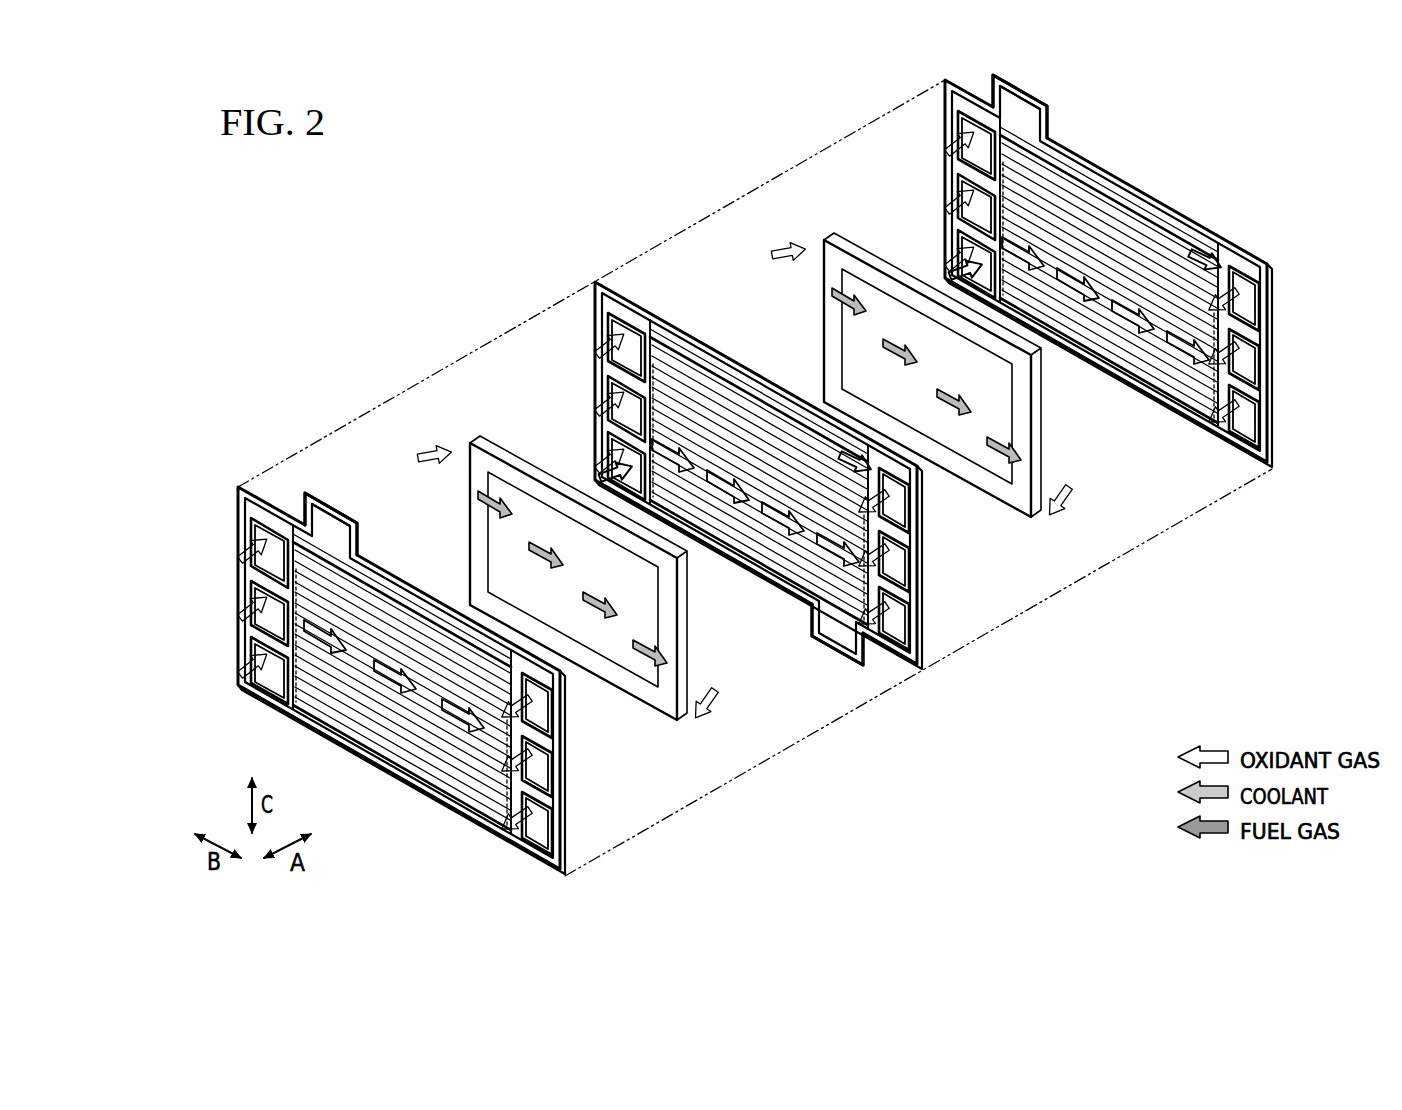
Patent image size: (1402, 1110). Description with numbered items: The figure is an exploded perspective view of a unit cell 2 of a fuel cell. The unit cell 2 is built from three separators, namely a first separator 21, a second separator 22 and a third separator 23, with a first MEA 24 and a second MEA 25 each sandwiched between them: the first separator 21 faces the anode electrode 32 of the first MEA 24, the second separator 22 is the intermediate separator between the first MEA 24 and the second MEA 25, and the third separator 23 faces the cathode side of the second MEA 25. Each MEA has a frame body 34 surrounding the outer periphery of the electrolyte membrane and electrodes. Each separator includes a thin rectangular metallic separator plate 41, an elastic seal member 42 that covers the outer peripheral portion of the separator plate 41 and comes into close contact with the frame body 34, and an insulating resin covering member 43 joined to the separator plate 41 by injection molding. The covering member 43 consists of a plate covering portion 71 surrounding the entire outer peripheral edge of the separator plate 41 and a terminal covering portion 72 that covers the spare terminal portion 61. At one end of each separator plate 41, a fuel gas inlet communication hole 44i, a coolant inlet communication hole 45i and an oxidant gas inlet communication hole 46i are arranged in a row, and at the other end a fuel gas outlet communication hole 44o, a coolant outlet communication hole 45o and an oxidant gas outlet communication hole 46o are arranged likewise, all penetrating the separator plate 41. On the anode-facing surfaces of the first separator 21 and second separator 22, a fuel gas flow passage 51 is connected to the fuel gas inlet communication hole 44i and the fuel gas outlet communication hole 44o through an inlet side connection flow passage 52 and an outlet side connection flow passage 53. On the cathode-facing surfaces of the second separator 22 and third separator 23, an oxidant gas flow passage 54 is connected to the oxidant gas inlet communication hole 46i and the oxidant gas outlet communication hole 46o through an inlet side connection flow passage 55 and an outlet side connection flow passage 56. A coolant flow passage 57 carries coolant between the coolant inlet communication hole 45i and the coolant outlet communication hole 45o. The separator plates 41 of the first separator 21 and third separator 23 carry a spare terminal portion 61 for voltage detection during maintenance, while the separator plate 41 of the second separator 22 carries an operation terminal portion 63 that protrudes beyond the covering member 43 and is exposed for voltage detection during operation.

The unit cell 2 is at (1226, 142).
The first separator 21 is at (585, 796).
The second separator 22 is at (980, 612).
The third separator 23 is at (1292, 465).
The first MEA 24 is at (718, 682).
The second MEA 25 is at (1068, 466).
The anode electrode 32 is at (645, 688).
The frame body 34 is at (497, 455).
The separator plate 41 is at (418, 758).
The seal member 42 is at (243, 622).
The covering member 43 is at (333, 500).
The fuel gas inlet communication hole 44i is at (263, 533).
The coolant inlet communication hole 45i is at (258, 598).
The oxidant gas inlet communication hole 46i is at (258, 668).
The fuel gas outlet communication hole 44o is at (548, 812).
The coolant outlet communication hole 45o is at (548, 750).
The oxidant gas outlet communication hole 46o is at (548, 700).
The fuel gas flow passage 51 is at (540, 557).
The inlet side connection flow passage 52 is at (296, 566).
The outlet side connection flow passage 53 is at (510, 792).
The oxidant gas flow passage 54 is at (785, 480).
The inlet side connection flow passage 55 is at (630, 500).
The outlet side connection flow passage 56 is at (870, 470).
The coolant flow passage 57 is at (392, 675).
The spare terminal portion 61 is at (343, 521).
The operation terminal portion 63 is at (860, 655).
The plate covering portion 71 is at (274, 504).
The terminal covering portion 72 is at (323, 498).